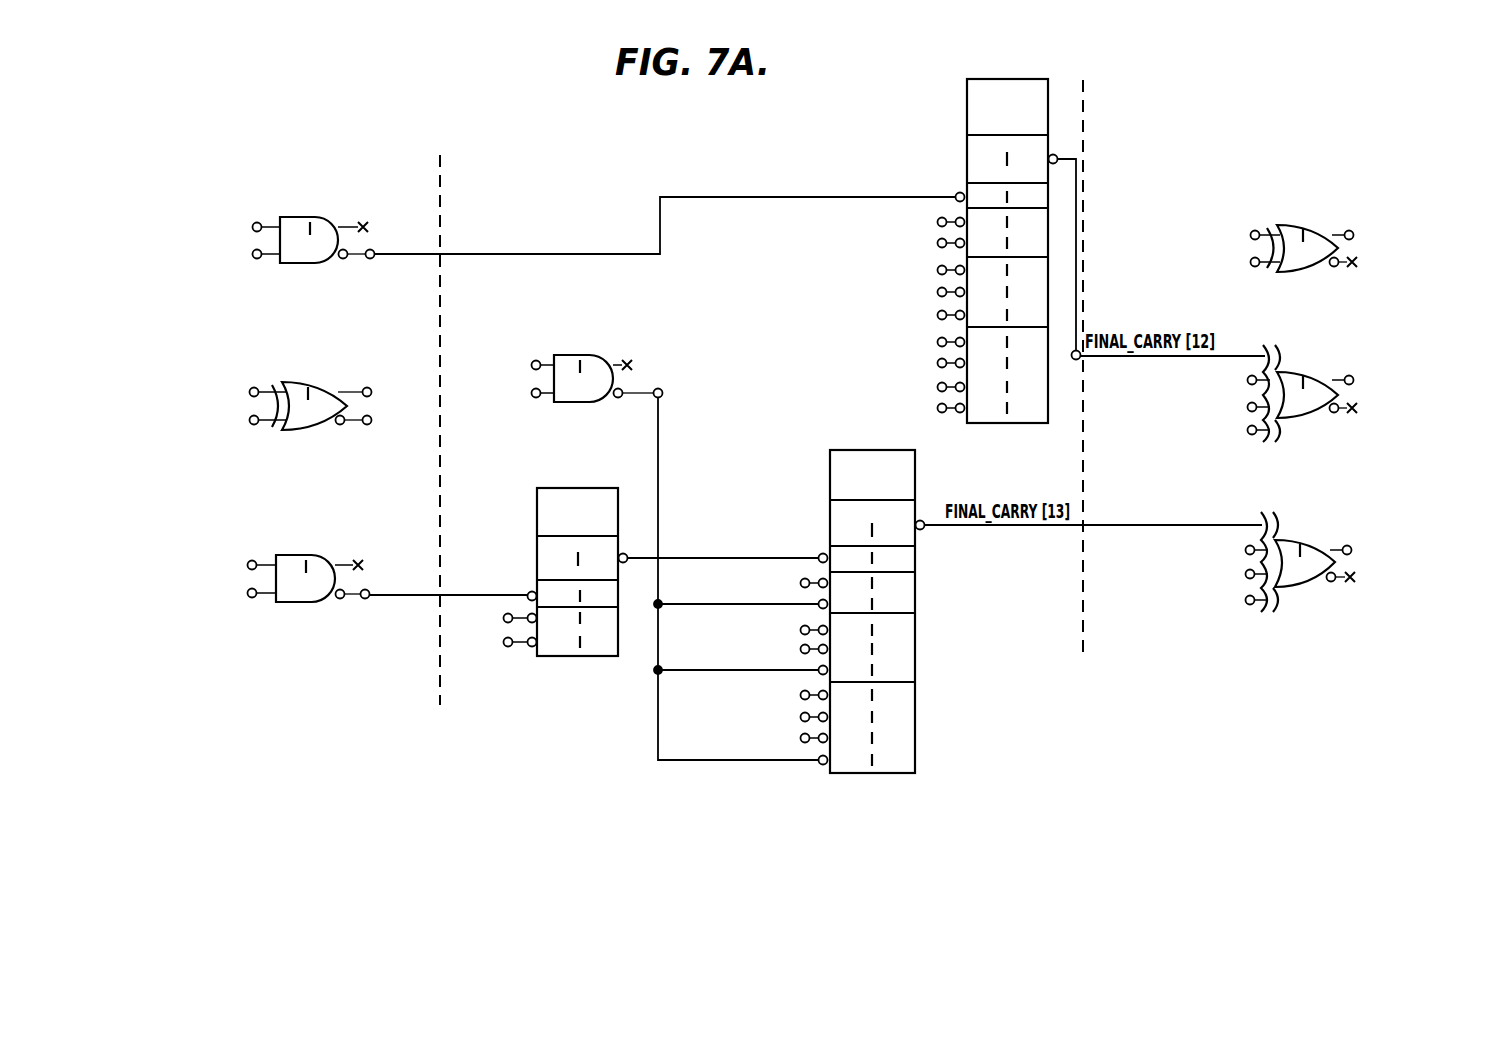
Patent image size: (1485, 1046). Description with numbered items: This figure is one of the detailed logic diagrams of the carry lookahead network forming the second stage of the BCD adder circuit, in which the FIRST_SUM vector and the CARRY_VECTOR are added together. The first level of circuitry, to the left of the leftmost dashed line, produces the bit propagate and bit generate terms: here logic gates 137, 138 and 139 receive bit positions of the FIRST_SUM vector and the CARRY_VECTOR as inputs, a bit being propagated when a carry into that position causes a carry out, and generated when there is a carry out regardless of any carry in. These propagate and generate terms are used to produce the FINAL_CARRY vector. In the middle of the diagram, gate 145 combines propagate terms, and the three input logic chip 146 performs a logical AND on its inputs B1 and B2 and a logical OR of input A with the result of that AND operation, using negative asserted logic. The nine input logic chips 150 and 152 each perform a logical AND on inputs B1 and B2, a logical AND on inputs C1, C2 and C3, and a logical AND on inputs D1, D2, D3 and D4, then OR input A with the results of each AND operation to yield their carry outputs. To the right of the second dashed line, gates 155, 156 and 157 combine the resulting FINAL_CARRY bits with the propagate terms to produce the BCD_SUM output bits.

The AND gate L400 137 is at (310, 217).
The XOR gate L401 138 is at (306, 382).
The AND gate L402 139 is at (302, 555).
The AND gate L415 145 is at (573, 402).
The three input logic chip 146 is at (537, 545).
The nine input logic chip 150 is at (830, 517).
The nine input logic chip 152 is at (967, 128).
The XOR gate L428 155 is at (1285, 225).
The XOR gate L429 156 is at (1290, 372).
The XOR gate L430 157 is at (1300, 540).